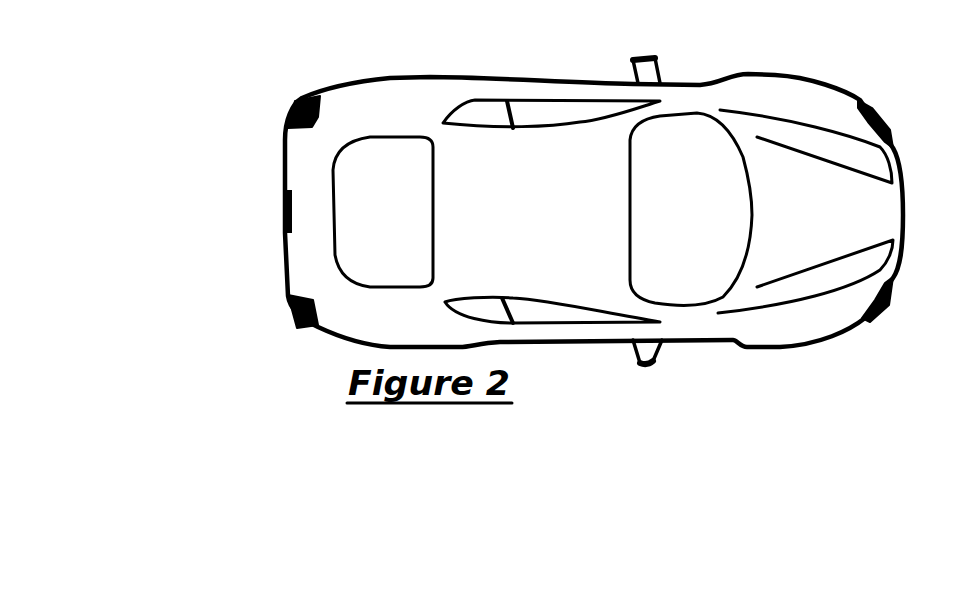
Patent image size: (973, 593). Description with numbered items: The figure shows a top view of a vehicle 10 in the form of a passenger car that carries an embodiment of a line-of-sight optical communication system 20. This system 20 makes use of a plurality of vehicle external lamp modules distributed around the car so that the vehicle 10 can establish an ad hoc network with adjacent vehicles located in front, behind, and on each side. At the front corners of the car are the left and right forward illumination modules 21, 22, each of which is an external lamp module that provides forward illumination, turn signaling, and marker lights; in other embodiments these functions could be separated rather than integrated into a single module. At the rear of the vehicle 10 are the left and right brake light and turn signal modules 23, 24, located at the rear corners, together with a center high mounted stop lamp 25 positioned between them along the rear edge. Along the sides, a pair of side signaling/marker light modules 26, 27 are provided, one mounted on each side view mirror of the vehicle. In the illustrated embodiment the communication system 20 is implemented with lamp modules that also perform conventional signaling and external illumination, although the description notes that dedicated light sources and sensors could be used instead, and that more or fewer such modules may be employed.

The vehicle 10 is at (428, 75).
The line-of-sight optical communication system 20 is at (806, 40).
The left forward illumination module 21 is at (877, 107).
The right forward illumination module 22 is at (885, 311).
The left brake light and turn signal module 23 is at (295, 101).
The right brake light and turn signal module 24 is at (292, 321).
The center high mounted stop lamp 25 is at (283, 208).
The side signaling/marker light module 26 is at (650, 58).
The side signaling/marker light module 27 is at (656, 362).